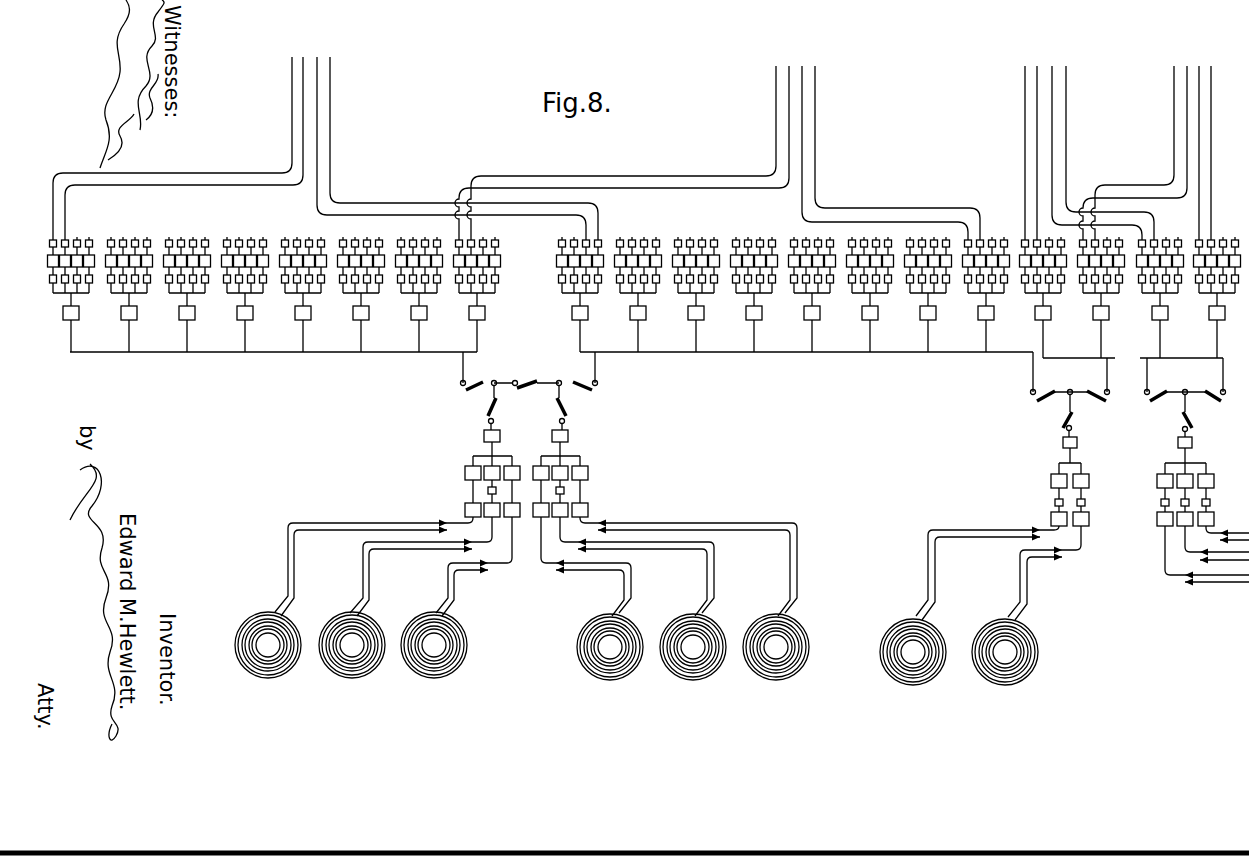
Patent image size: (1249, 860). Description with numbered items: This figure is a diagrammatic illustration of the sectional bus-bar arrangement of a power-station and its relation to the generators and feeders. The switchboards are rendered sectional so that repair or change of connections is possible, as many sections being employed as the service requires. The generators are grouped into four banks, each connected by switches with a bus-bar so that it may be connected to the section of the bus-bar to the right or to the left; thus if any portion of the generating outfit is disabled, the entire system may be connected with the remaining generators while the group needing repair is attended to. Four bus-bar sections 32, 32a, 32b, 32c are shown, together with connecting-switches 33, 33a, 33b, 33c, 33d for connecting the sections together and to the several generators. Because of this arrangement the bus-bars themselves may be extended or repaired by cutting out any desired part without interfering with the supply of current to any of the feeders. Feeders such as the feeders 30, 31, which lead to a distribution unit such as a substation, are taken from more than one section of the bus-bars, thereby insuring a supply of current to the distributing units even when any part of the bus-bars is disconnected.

The feeder 30 is at (296, 127).
The feeder 31 is at (323, 127).
The bus-bar section 32 is at (205, 355).
The bus-bar section 32a is at (700, 355).
The bus-bar section 32b is at (1058, 362).
The bus-bar section 32c is at (1170, 362).
The connecting-switch 33 is at (1207, 437).
The connecting-switch 33a is at (1150, 400).
The connecting-switch 33b is at (1220, 413).
The connecting-switch 33c is at (583, 398).
The connecting-switch 33d is at (570, 422).